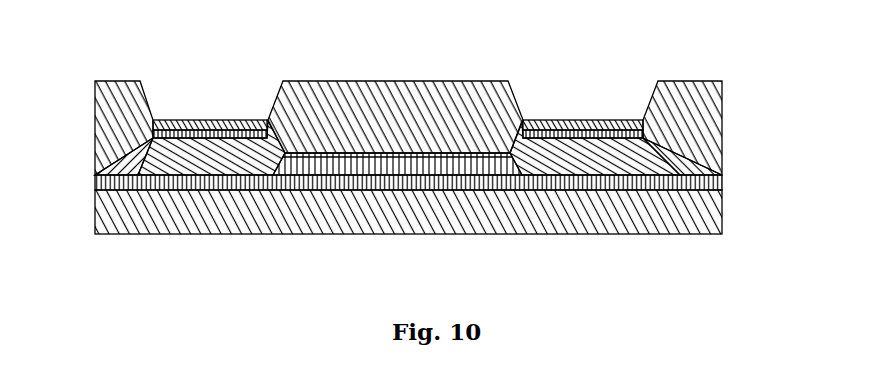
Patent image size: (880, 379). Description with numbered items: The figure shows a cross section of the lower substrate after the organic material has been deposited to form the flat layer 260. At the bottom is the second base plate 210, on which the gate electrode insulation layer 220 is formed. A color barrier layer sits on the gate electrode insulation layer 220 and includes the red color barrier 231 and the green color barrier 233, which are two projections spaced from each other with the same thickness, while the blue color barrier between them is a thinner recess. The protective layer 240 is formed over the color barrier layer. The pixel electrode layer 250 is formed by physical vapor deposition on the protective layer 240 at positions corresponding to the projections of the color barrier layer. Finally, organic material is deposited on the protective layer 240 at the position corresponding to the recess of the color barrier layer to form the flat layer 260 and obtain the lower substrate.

The second base plate 210 is at (441, 234).
The gate electrode insulation layer 220 is at (441, 186).
The red color barrier 231 is at (377, 132).
The green color barrier 233 is at (463, 219).
The protective layer 240 is at (462, 148).
The pixel electrode layer 250 is at (398, 88).
The flat layer 260 is at (441, 117).